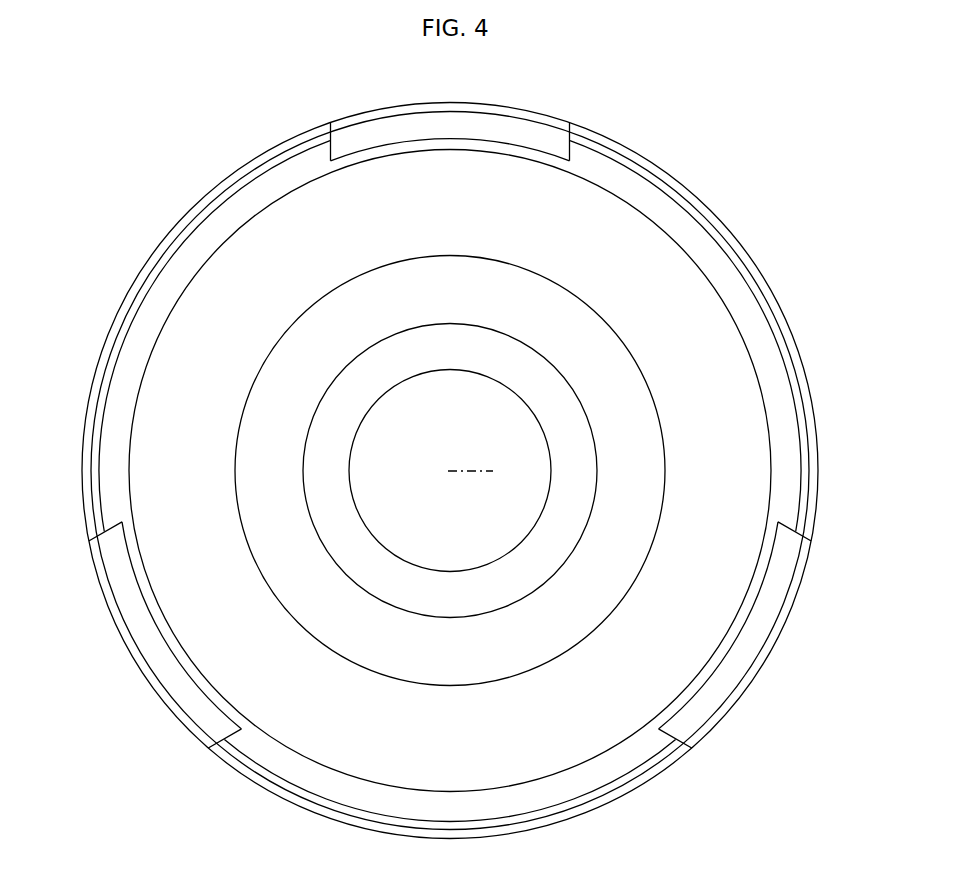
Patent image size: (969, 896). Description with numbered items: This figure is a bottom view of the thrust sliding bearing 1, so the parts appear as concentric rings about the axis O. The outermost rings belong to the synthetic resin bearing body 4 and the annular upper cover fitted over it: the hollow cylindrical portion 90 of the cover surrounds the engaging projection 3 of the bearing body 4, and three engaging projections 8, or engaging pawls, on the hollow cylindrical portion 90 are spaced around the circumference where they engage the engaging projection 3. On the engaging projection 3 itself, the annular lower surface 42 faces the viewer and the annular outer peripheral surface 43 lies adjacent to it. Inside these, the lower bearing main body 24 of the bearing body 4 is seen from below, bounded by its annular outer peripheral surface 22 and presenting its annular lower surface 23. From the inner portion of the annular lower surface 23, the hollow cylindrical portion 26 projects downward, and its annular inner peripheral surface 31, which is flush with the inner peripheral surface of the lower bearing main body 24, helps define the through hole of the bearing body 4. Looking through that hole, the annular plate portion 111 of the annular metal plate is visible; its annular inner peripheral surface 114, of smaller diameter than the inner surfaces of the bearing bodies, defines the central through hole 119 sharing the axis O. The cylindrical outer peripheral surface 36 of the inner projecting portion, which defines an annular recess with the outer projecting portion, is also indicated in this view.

The thrust sliding bearing 1 is at (740, 223).
The engaging projection 3 is at (660, 211).
The bearing body 4 is at (143, 292).
The engaging projections 8 is at (454, 125).
The annular outer peripheral surface 22 is at (607, 188).
The annular lower surface 23 is at (737, 437).
The lower bearing main body 24 is at (305, 730).
The hollow cylindrical portion 26 is at (597, 355).
The annular inner peripheral surface 31 is at (403, 612).
The cylindrical outer peripheral surface 36 is at (515, 678).
The annular lower surface 42 is at (120, 407).
The annular outer peripheral surface 43 is at (632, 774).
The hollow cylindrical portion 90 is at (197, 208).
The annular plate portion 111 is at (347, 533).
The annular inner peripheral surface 114 is at (380, 385).
The central through hole 119 is at (428, 556).